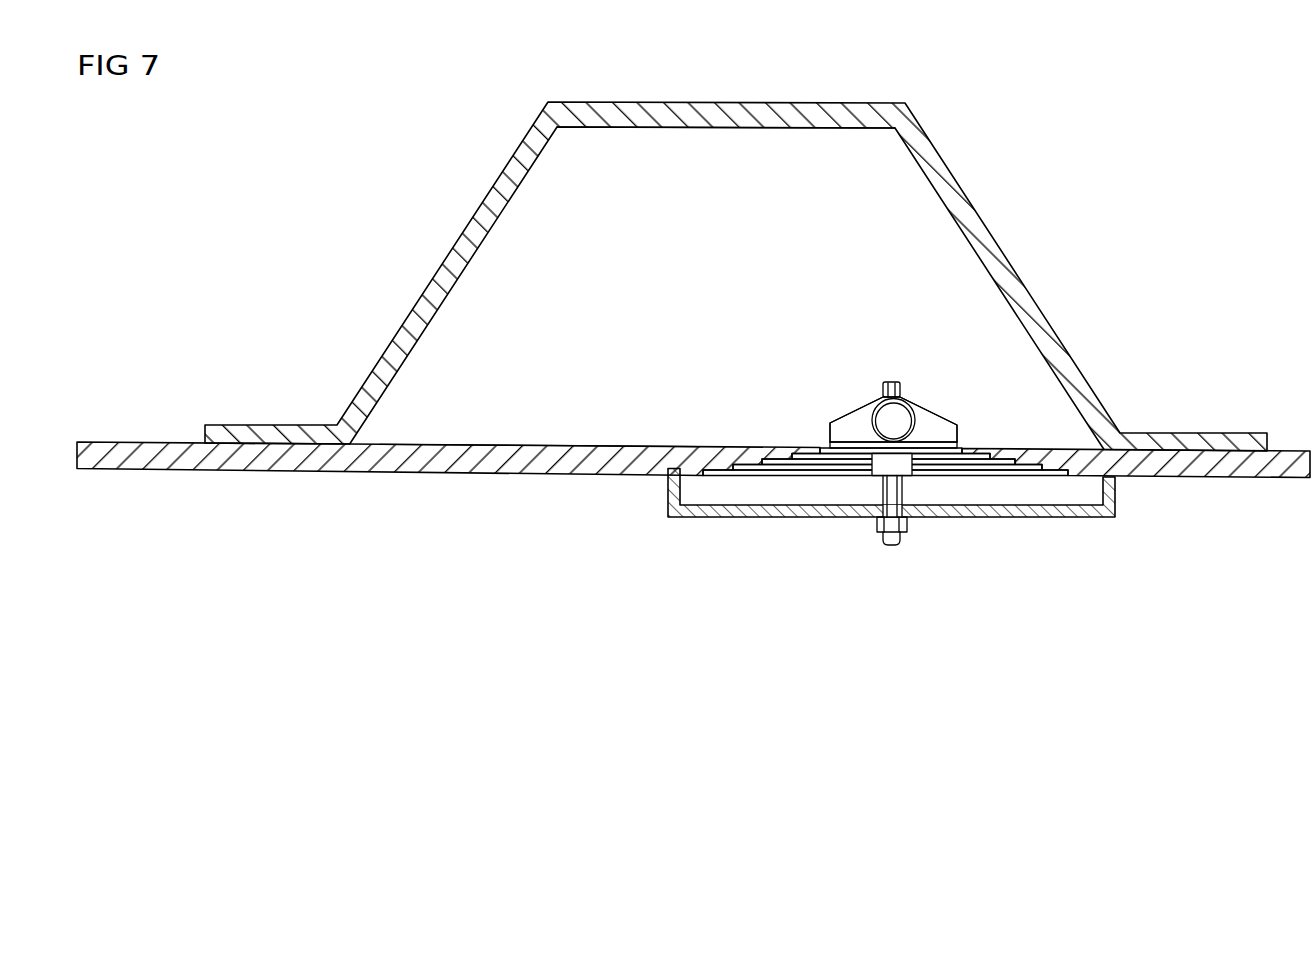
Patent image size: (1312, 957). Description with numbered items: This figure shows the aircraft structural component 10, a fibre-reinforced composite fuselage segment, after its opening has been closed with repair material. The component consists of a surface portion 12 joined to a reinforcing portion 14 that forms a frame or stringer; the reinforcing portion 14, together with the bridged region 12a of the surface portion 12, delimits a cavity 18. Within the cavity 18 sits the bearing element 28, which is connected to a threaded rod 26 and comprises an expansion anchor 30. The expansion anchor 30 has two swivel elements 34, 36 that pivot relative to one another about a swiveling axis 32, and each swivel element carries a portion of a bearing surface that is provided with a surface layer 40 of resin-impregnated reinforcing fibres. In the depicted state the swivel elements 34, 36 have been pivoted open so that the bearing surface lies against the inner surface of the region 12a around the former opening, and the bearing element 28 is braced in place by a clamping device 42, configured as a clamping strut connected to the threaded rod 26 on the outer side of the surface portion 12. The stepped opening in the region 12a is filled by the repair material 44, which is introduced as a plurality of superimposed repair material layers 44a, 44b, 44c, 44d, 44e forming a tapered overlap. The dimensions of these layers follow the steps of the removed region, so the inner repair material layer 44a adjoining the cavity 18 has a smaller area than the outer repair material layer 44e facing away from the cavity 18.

The aircraft structural component 10 is at (1023, 199).
The surface portion 12 is at (293, 475).
The region of the surface portion 12a is at (610, 445).
The reinforcing portion 14 is at (697, 100).
The cavity 18 is at (822, 143).
The threaded rod 26 is at (890, 540).
The bearing element 28 is at (939, 384).
The expansion anchor 30 is at (850, 418).
The swiveling axis 32 is at (887, 380).
The swivel element 34 is at (848, 413).
The swivel element 36 is at (940, 427).
The surface layer 40 is at (957, 445).
The clamping device 42 is at (1060, 512).
The repair material 44 is at (946, 486).
The inner repair material layer 44a is at (913, 478).
The repair material layer 44b is at (867, 478).
The repair material layer 44c is at (820, 478).
The repair material layer 44d is at (770, 478).
The outer repair material layer 44e is at (725, 478).